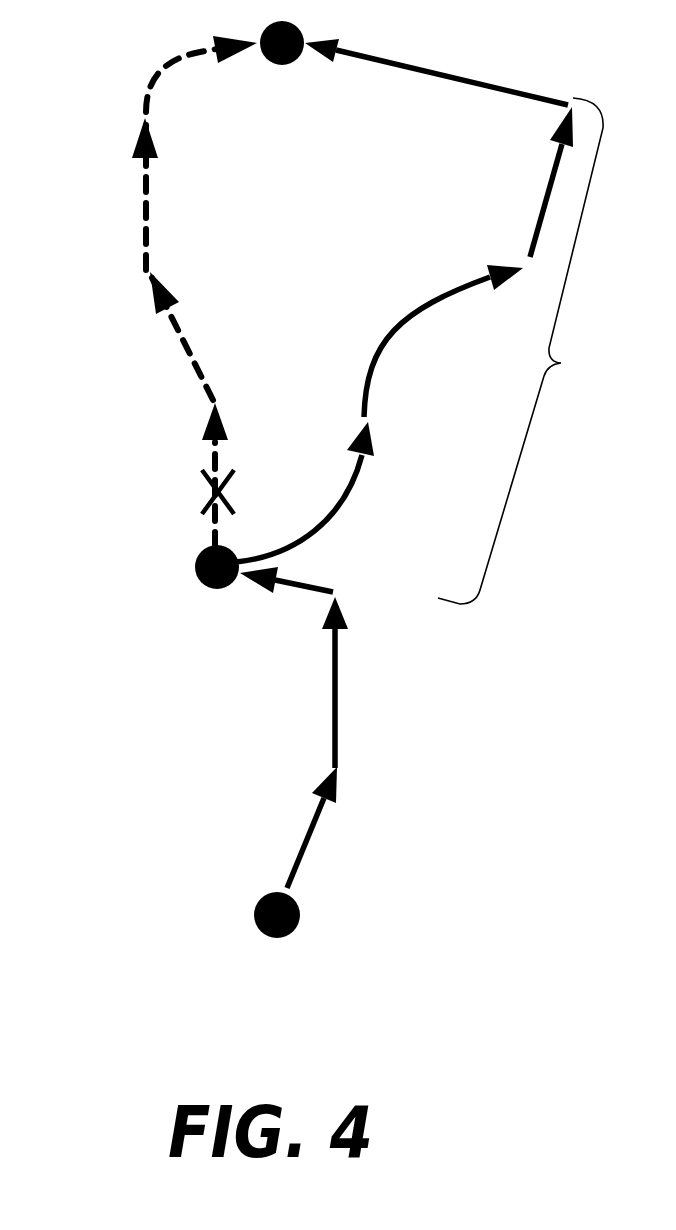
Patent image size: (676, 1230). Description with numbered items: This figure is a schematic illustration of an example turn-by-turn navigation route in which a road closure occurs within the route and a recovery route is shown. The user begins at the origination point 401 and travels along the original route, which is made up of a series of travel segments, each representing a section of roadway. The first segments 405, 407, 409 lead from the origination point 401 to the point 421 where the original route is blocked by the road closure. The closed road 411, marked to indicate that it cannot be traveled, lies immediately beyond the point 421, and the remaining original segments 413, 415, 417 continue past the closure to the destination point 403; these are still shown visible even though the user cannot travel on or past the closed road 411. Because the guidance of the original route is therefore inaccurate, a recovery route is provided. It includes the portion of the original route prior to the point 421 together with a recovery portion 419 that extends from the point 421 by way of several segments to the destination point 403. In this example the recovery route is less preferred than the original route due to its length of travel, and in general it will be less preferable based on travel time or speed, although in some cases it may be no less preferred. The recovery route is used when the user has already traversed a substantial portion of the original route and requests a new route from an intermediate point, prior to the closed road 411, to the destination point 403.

The origination point 401 is at (265, 890).
The destination point 403 is at (275, 65).
The travel segment 405 is at (310, 823).
The travel segment 407 is at (330, 677).
The travel segment 409 is at (290, 592).
The closed road 411 is at (205, 450).
The travel segment 413 is at (175, 355).
The travel segment 415 is at (143, 200).
The travel segment 417 is at (160, 73).
The recovery portion 419 is at (431, 321).
The blocked point 421 is at (197, 563).